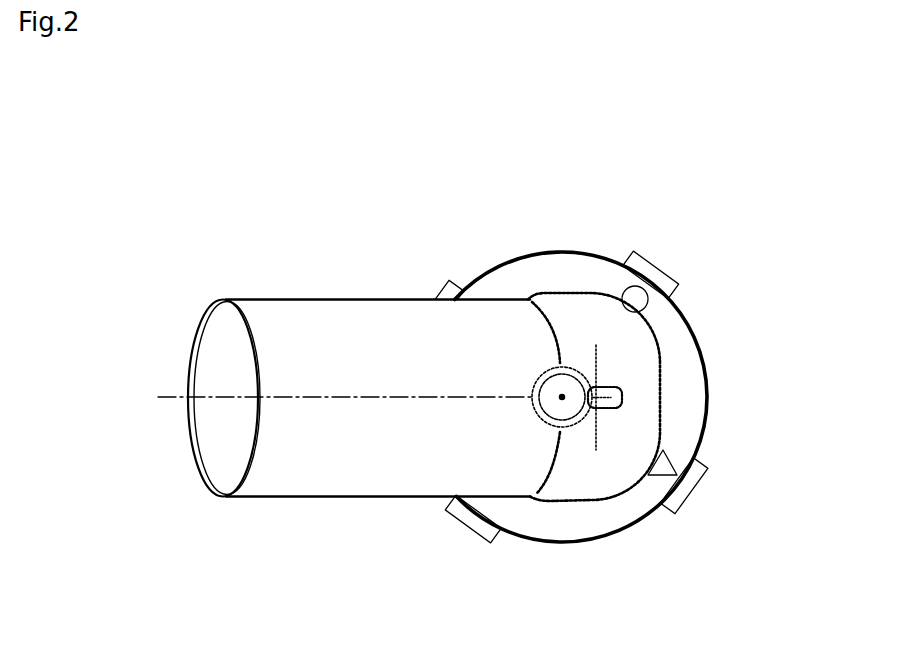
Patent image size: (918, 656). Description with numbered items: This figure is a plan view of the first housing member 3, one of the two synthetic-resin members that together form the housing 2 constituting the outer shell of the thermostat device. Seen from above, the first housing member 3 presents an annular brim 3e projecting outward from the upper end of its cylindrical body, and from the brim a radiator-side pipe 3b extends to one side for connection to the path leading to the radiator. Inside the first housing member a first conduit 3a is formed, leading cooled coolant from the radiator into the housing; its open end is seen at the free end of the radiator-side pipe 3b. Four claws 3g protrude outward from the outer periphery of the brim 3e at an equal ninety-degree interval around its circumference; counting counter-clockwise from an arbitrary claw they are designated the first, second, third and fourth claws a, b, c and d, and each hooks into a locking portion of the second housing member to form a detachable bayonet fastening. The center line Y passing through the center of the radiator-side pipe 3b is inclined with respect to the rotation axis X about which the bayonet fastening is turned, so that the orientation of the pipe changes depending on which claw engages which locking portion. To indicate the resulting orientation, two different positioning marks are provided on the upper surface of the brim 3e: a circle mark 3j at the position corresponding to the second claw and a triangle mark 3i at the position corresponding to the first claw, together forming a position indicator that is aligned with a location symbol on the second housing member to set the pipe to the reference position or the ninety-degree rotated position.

The first housing member 3 is at (466, 376).
The housing 2 is at (492, 300).
The first conduit 3a is at (208, 423).
The radiator-side pipe 3b is at (313, 477).
The annular brim 3e is at (693, 385).
The claws 3g is at (572, 394).
The positioning mark 3j is at (743, 300).
The positioning mark 3i is at (756, 464).
The rotation axis X is at (562, 397).
The center line Y is at (335, 396).